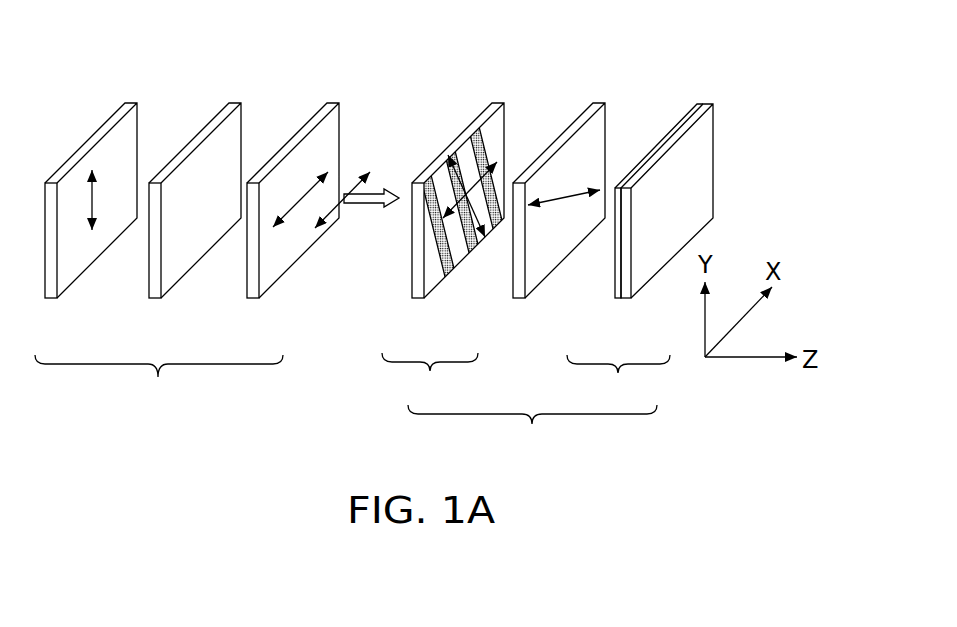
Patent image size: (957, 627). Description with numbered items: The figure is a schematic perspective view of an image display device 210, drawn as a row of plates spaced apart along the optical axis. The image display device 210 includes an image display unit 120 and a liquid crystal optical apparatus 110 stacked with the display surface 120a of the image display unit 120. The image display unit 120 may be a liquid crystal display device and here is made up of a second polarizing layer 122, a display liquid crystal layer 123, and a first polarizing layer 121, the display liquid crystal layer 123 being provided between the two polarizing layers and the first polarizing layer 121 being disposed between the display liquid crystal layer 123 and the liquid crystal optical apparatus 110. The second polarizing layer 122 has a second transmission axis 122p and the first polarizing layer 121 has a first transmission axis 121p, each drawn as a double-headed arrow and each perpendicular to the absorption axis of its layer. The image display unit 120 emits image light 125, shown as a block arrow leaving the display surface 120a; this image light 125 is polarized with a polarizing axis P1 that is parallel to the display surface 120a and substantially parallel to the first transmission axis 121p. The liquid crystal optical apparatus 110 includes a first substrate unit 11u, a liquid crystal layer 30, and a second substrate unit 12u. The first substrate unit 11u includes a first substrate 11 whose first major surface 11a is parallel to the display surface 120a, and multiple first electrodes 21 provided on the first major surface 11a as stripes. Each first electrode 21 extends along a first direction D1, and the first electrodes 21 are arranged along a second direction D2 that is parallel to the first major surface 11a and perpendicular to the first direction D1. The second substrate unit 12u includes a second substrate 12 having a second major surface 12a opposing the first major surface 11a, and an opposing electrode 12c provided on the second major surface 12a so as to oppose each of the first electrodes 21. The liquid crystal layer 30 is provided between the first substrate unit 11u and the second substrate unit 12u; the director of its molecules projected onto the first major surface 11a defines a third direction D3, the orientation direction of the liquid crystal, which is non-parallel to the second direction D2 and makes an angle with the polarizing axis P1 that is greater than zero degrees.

The image display device 210 is at (731, 99).
The liquid crystal optical apparatus 110 is at (532, 431).
The image display unit 120 is at (159, 384).
The display surface 120a is at (277, 255).
The first polarizing layer 121 is at (252, 284).
The first transmission axis 121p is at (304, 193).
The second polarizing layer 122 is at (50, 284).
The second transmission axis 122p is at (98, 191).
The display liquid crystal layer 123 is at (154, 284).
The image light 125 is at (375, 205).
The polarizing axis P1 is at (357, 183).
The first substrate 11 is at (416, 290).
The first major surface 11a is at (430, 254).
The first substrate unit 11u is at (430, 382).
The first electrodes 21 is at (465, 262).
The liquid crystal layer 30 is at (518, 290).
The second substrate 12 is at (627, 292).
The second major surface 12a is at (694, 117).
The opposing electrode 12c is at (618, 265).
The second substrate unit 12u is at (618, 383).
The first direction D1 is at (468, 178).
The second direction D2 is at (473, 182).
The third direction D3 is at (563, 197).